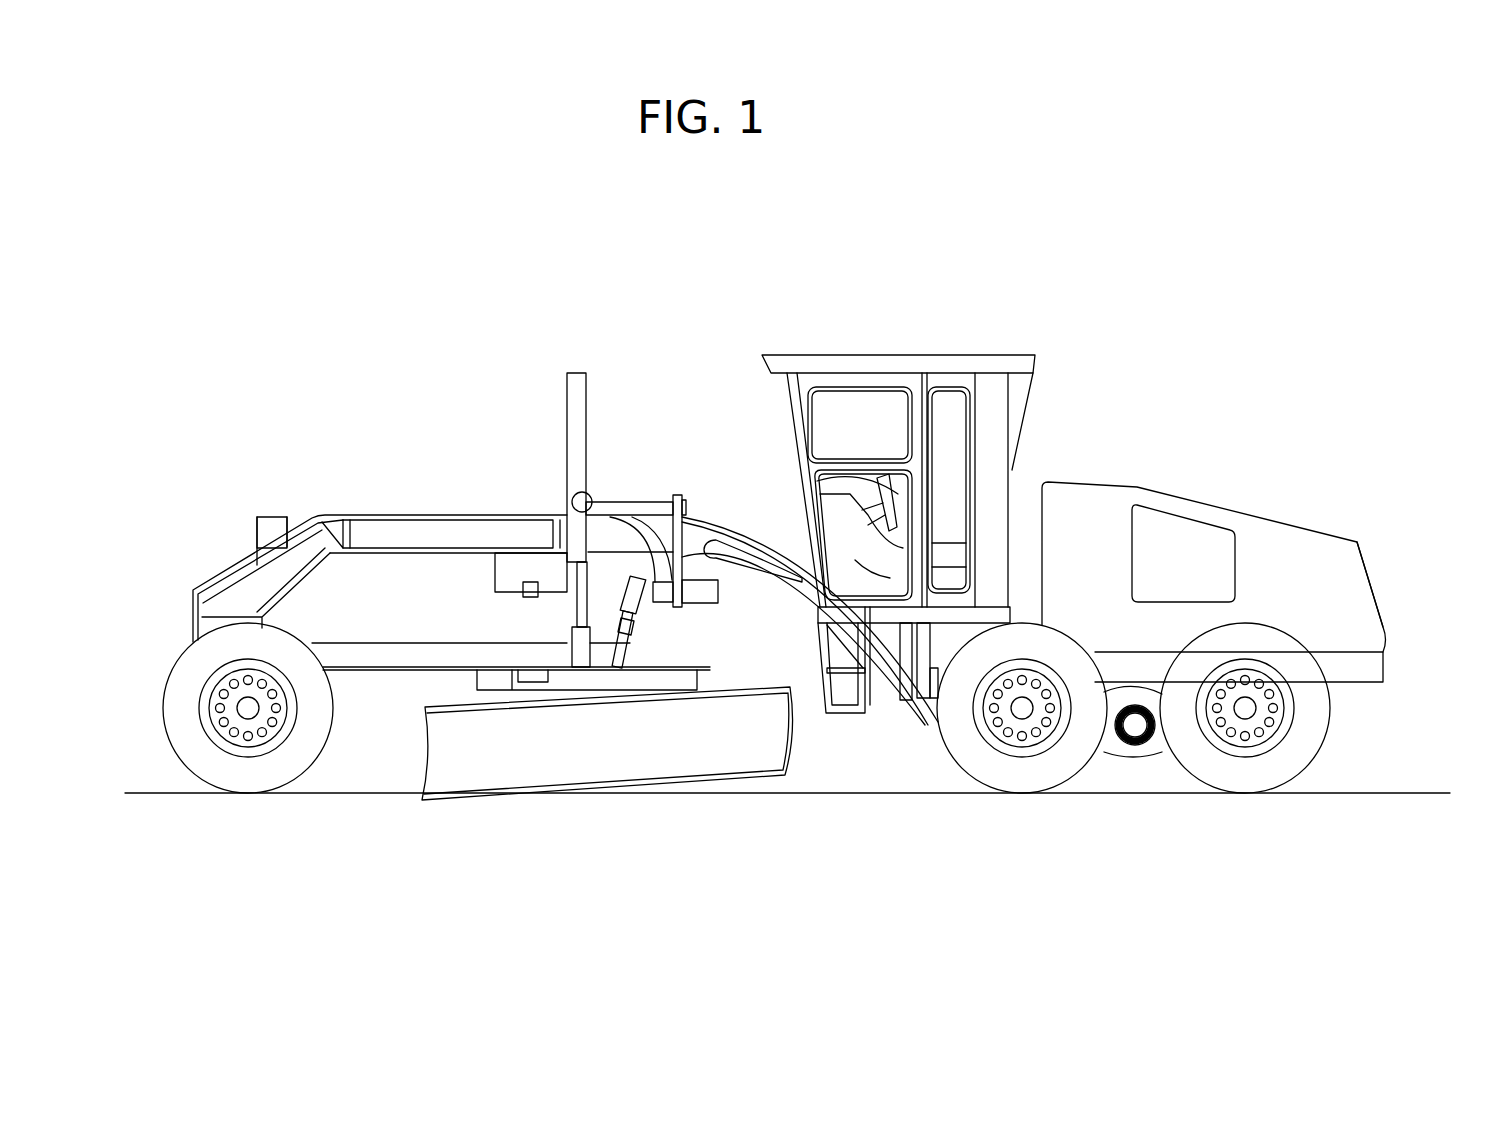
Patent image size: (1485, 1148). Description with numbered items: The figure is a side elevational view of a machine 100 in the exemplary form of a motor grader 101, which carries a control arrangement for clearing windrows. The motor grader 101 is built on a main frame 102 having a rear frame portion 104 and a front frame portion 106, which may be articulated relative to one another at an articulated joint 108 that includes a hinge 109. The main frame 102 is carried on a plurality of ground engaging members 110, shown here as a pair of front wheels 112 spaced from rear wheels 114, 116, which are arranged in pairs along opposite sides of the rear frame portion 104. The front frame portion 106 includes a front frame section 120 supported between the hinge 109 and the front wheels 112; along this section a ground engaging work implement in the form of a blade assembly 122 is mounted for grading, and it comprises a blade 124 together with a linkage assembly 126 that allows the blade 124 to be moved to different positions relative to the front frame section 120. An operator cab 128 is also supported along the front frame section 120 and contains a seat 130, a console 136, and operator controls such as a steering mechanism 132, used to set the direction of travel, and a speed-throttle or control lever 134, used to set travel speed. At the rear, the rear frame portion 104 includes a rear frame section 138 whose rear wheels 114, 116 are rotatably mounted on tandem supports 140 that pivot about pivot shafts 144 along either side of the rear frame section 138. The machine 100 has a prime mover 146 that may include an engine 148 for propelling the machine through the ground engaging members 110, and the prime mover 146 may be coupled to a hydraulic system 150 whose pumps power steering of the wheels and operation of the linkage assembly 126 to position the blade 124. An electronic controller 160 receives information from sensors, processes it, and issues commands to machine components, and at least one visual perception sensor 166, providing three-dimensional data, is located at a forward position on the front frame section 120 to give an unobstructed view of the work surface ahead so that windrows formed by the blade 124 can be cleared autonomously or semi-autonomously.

The machine 100 is at (731, 283).
The motor grader 101 is at (832, 240).
The main frame 102 is at (175, 610).
The rear frame portion 104 is at (1345, 698).
The front frame portion 106 is at (437, 515).
The articulated joint 108 is at (933, 717).
The hinge 109 is at (938, 722).
The ground engaging members 110 is at (232, 808).
The front wheels 112 is at (327, 753).
The rear wheel 114 is at (1095, 775).
The rear wheel 116 is at (1180, 770).
The front frame section 120 is at (325, 508).
The blade assembly 122 is at (585, 805).
The blade 124 is at (612, 757).
The linkage assembly 126 is at (610, 500).
The operator cab 128 is at (893, 355).
The seat 130 is at (947, 553).
The steering mechanism 132 is at (897, 493).
The control lever 134 is at (897, 467).
The console 136 is at (850, 553).
The rear frame section 138 is at (1370, 683).
The tandem supports 140 is at (1110, 742).
The pivot shafts 144 is at (1136, 728).
The prime mover 146 is at (1318, 552).
The engine 148 is at (1257, 532).
The hydraulic system 150 is at (1350, 590).
The electronic controller 160 is at (885, 573).
The visual perception sensor 166 is at (257, 520).